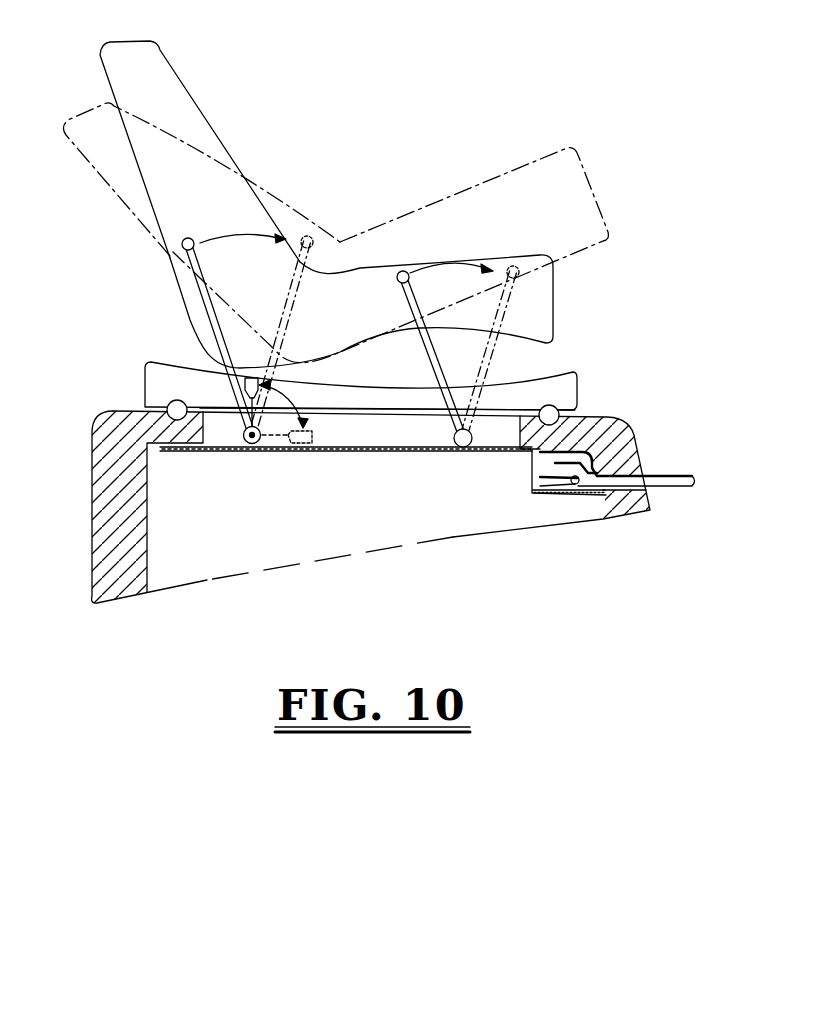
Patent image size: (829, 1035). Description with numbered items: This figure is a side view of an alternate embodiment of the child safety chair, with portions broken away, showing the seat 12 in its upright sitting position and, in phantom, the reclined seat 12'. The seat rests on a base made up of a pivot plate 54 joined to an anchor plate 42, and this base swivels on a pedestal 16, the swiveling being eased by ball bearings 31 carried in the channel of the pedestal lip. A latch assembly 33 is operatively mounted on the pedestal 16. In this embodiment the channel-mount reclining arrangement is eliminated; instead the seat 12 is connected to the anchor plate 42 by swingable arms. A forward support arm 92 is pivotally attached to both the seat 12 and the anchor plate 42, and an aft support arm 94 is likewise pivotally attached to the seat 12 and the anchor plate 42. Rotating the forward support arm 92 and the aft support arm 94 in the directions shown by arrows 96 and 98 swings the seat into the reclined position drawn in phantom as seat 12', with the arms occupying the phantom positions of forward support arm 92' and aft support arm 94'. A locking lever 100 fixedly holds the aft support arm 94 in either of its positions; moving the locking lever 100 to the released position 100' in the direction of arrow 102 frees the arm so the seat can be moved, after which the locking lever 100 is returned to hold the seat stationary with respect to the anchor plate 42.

The seat 12 is at (200, 131).
The seat in reclined position 12' is at (324, 156).
The pedestal 16 is at (120, 605).
The ball bearings 31 is at (168, 404).
The latch assembly 33 is at (668, 493).
The anchor plate 42 is at (444, 456).
The pivot plate 54 is at (138, 365).
The forward support arm 92 is at (388, 311).
The forward support arm in phantom position 92' is at (393, 255).
The aft support arm 94 is at (187, 337).
The aft support arm in phantom position 94' is at (312, 310).
The arrow 96 is at (240, 233).
The arrow 98 is at (465, 262).
The locking lever 100 is at (238, 462).
The locking lever in released position 100' is at (289, 464).
The arrow 102 is at (300, 402).